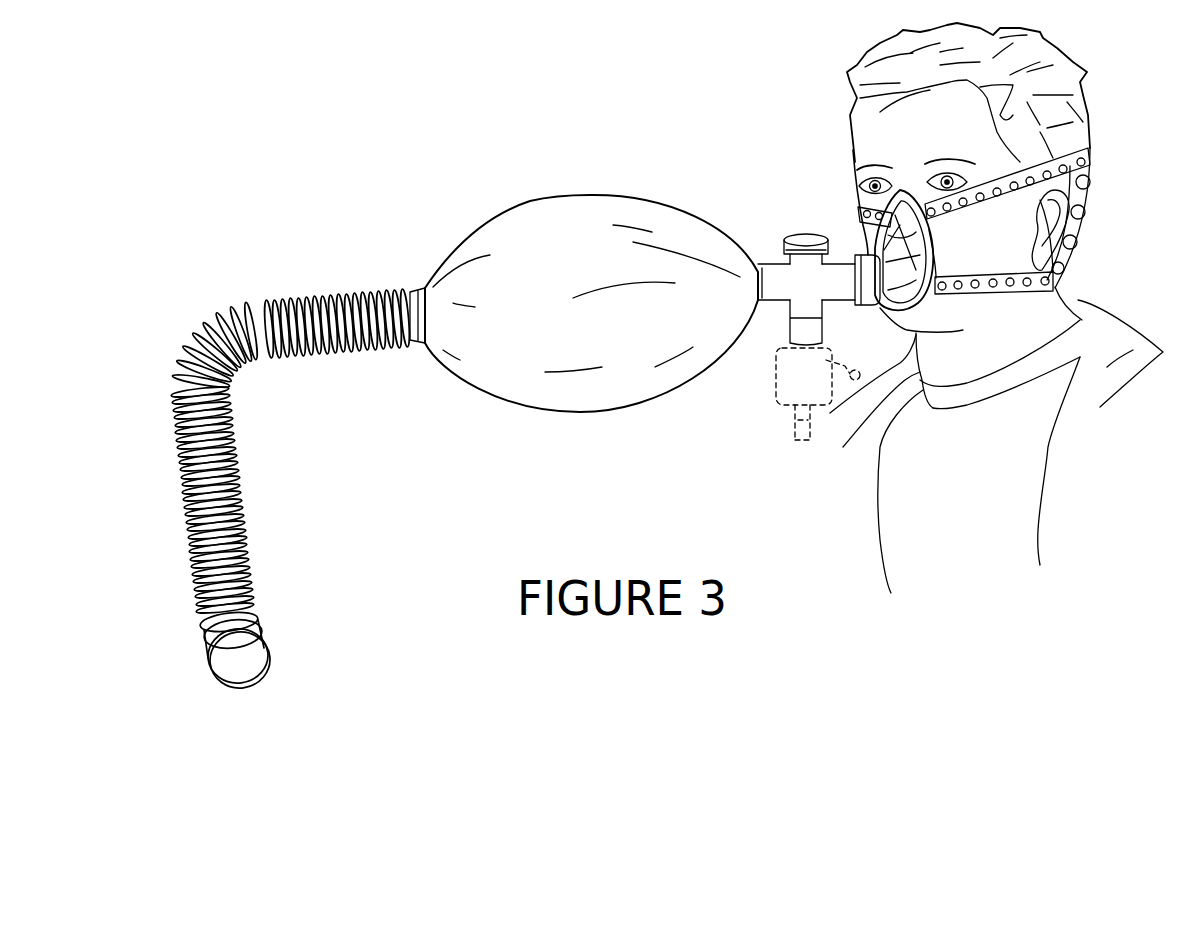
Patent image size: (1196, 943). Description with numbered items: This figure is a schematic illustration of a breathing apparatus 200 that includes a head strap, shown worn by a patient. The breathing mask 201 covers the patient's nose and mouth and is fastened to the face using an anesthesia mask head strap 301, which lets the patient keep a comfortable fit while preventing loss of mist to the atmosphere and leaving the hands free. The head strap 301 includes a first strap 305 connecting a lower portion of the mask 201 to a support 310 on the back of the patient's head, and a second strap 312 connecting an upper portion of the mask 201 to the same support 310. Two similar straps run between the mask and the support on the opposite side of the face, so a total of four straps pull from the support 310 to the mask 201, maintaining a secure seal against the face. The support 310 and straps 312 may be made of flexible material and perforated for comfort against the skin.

The resuscitation bag assembly 200 is at (494, 166).
The breathing mask 201 is at (858, 248).
The anesthesia mask head strap 301 is at (1090, 157).
The first strap 305 is at (1012, 290).
The support 310 is at (1083, 232).
The second strap 312 is at (977, 207).